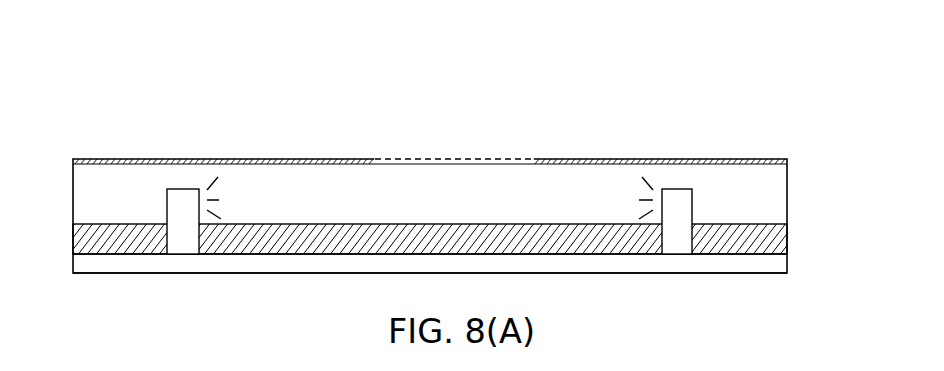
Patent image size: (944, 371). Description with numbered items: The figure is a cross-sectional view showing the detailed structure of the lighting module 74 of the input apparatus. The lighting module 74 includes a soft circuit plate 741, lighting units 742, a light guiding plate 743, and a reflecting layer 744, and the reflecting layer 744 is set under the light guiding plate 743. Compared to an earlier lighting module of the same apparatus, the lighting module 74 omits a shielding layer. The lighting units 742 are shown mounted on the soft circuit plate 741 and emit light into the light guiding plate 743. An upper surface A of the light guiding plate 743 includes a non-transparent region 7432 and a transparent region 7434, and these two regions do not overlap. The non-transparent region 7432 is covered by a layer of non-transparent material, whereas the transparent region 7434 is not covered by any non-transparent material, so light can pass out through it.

The lighting module 74 is at (654, 104).
The soft circuit plate 741 is at (787, 265).
The lighting units 742 is at (180, 237).
The light guiding plate 743 is at (787, 203).
The non-transparent region 7432 is at (343, 160).
The transparent region 7434 is at (495, 160).
The reflecting layer 744 is at (72, 228).
The upper surface A is at (804, 161).